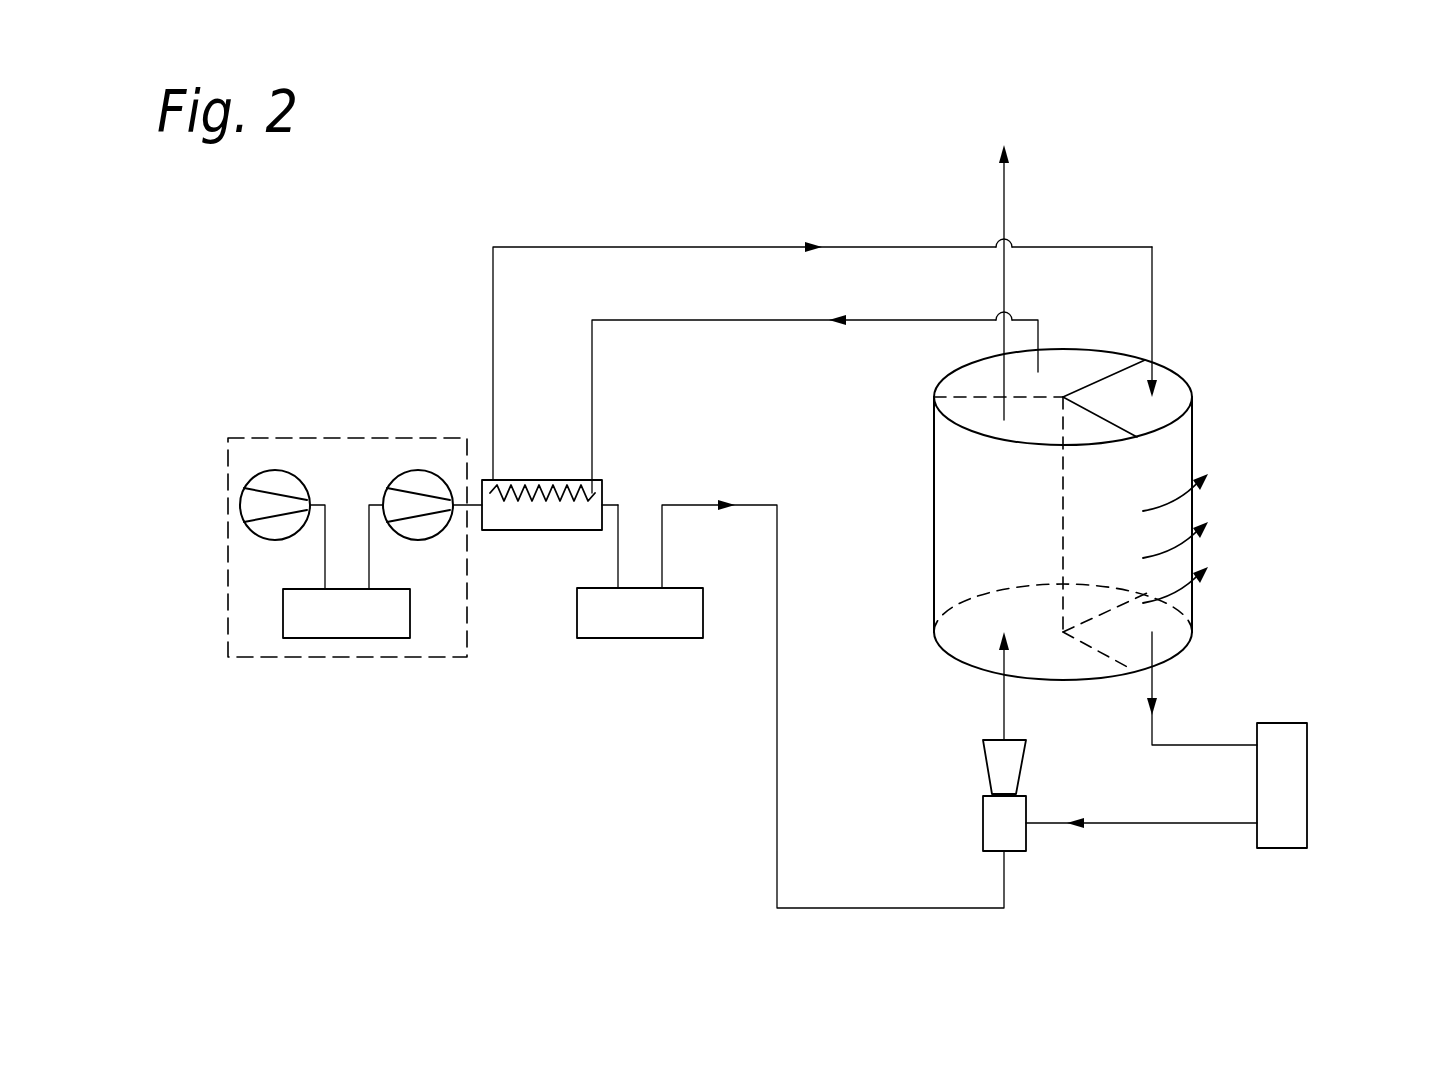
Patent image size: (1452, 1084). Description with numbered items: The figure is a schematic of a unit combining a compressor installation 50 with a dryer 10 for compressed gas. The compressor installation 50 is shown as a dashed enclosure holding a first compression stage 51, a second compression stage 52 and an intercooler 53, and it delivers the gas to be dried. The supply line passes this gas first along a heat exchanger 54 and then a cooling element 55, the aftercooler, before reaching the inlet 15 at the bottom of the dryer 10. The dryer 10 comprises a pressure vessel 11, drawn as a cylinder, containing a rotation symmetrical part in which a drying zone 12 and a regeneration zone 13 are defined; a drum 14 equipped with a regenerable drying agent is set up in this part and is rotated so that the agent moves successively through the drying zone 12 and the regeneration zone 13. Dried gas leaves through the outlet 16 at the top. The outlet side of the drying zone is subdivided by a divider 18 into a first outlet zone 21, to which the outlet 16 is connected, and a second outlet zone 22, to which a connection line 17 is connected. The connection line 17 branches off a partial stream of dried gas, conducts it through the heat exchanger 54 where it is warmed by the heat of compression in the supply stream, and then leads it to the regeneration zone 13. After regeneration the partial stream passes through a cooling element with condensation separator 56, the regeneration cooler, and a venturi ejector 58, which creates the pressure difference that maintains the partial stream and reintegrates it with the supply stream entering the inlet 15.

The dryer 10 is at (656, 172).
The pressure vessel 11 is at (1215, 272).
The drying zone 12 is at (968, 560).
The regeneration zone 13 is at (1178, 453).
The drum 14 is at (1190, 380).
The inlet 15 is at (1002, 702).
The outlet 16 is at (1005, 190).
The connection line 17 is at (690, 247).
The divider 18 is at (950, 392).
The first outlet zone 21 is at (980, 430).
The second outlet zone 22 is at (980, 374).
The compressor installation 50 is at (327, 452).
The first compression stage 51 is at (252, 500).
The second compression stage 52 is at (415, 478).
The intercooler 53 is at (305, 645).
The heat exchanger 54 is at (498, 523).
The cooling element 55 is at (675, 641).
The cooling element with condensation separator 56 is at (1297, 825).
The venturi ejector 58 is at (1015, 843).